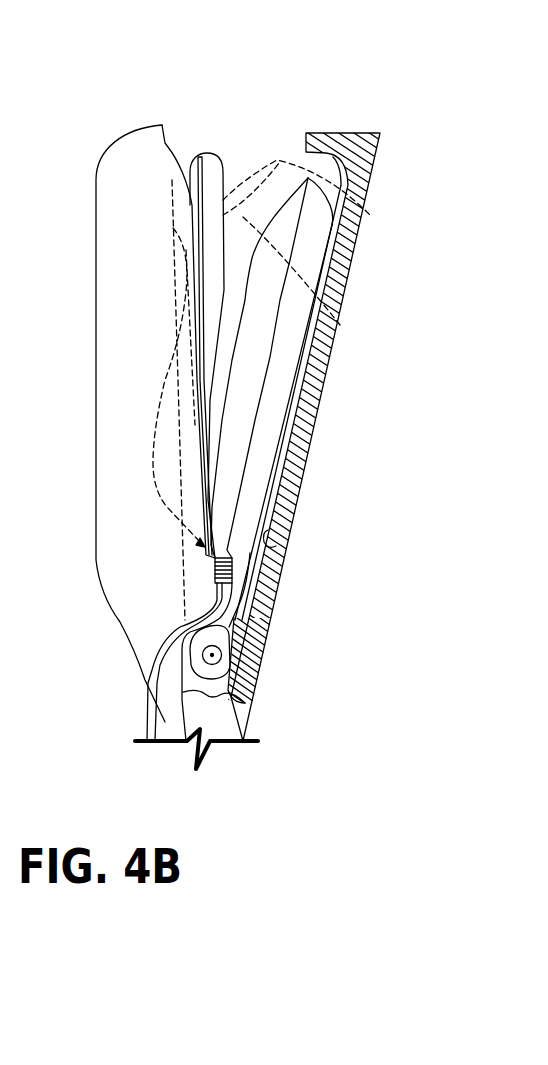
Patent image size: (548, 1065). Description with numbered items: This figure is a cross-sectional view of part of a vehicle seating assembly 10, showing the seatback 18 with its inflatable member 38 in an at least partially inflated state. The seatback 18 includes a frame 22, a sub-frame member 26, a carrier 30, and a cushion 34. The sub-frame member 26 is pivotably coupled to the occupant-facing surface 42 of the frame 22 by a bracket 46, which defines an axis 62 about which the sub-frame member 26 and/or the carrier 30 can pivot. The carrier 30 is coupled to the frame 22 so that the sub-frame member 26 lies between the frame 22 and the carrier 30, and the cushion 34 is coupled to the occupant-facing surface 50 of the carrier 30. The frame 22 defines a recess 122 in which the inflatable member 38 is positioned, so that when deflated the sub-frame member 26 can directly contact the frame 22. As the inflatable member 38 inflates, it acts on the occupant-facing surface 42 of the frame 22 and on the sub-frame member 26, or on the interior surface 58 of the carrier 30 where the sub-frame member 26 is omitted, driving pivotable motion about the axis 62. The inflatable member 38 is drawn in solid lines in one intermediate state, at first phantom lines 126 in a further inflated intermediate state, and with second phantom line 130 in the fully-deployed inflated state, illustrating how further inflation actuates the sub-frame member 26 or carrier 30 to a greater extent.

The vehicle seating assembly 10 is at (133, 100).
The seatback 18 is at (373, 178).
The frame 22 is at (245, 653).
The sub-frame member 26 is at (221, 167).
The carrier 30 is at (187, 155).
The cushion 34 is at (95, 334).
The inflatable member 38 is at (262, 490).
The occupant-facing surface 42 is at (183, 720).
The bracket 46 is at (244, 685).
The occupant-facing surface 50 is at (173, 228).
The interior surface 58 is at (195, 185).
The axis 62 is at (212, 658).
The recess 122 is at (272, 537).
The first phantom lines 126 is at (340, 325).
The second phantom line 130 is at (370, 215).